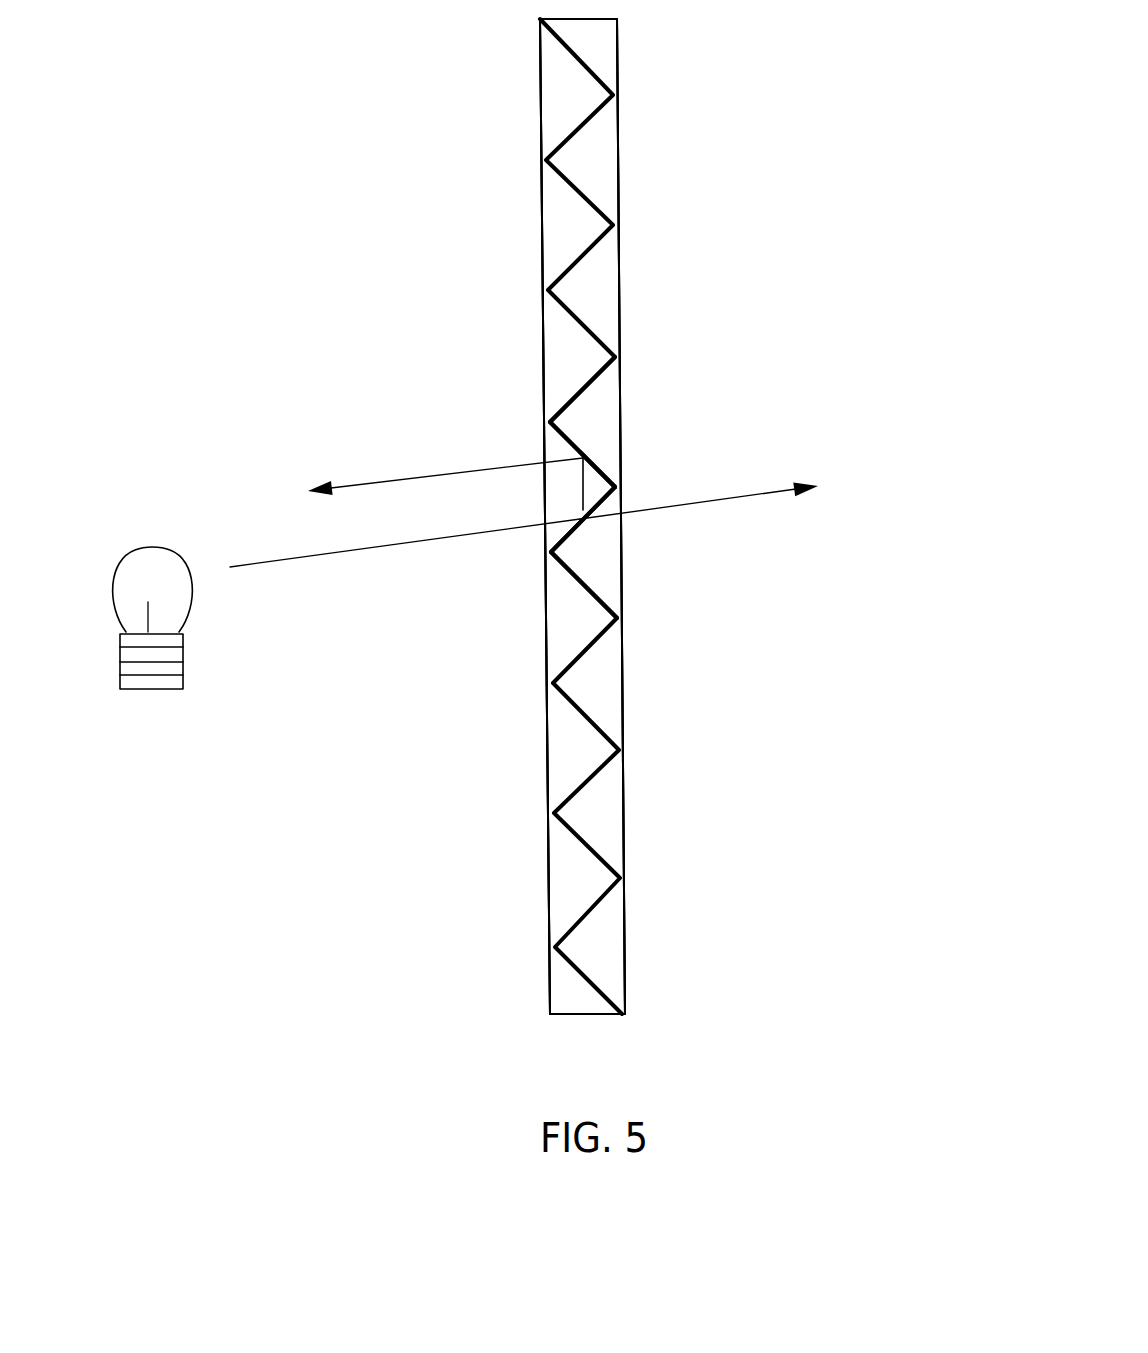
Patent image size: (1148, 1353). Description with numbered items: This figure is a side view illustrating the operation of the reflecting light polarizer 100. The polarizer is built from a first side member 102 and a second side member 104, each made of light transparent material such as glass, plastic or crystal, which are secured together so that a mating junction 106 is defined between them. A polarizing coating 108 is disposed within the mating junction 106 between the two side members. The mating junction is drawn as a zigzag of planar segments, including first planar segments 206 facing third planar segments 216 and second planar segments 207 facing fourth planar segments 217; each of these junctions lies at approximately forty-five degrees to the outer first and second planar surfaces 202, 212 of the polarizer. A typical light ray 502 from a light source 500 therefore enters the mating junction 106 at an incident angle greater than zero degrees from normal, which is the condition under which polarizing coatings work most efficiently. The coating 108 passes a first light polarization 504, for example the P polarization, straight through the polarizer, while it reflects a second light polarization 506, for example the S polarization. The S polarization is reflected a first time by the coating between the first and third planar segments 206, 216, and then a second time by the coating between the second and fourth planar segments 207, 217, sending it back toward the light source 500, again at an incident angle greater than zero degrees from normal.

The reflecting light polarizer 100 is at (734, 240).
The first side member 102 is at (568, 221).
The second side member 104 is at (592, 160).
The mating junction 106 is at (622, 1014).
The polarizing coating 108 is at (588, 380).
The first planar surface 202 is at (548, 753).
The first planar segments 206 is at (562, 540).
The second planar segments 207 is at (560, 437).
The second planar surface 212 is at (625, 837).
The third planar segments 216 is at (573, 530).
The fourth planar segments 217 is at (598, 462).
The light source 500 is at (151, 687).
The light ray 502 is at (303, 560).
The first light polarization 504 is at (718, 495).
The second light polarization 506 is at (380, 478).